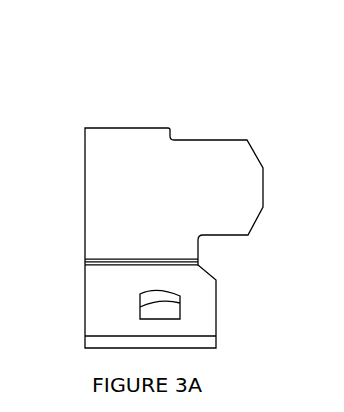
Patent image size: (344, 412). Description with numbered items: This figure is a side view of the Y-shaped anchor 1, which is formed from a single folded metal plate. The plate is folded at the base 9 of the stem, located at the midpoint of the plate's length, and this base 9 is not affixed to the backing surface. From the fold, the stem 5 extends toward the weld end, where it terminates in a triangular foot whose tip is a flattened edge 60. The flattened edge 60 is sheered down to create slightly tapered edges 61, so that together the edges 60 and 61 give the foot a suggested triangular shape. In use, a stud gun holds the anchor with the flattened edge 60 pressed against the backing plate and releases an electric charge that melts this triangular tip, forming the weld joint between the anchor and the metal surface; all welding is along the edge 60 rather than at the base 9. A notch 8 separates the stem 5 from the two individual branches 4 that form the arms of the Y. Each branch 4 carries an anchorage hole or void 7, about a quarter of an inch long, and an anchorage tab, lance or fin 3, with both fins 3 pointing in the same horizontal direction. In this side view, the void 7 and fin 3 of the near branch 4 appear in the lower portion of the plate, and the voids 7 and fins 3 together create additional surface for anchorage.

The Y-shaped anchor 1 is at (243, 110).
The anchorage fin 3 is at (170, 311).
The branch 4 is at (216, 328).
The stem 5 is at (137, 128).
The anchorage void 7 is at (168, 300).
The notch 8 is at (202, 238).
The base of the stem 9 is at (85, 127).
The flattened edge 60 is at (263, 190).
The tapered edge 61 is at (260, 223).